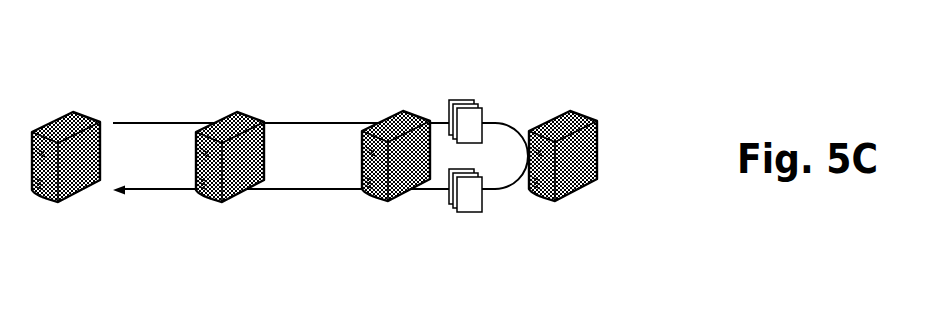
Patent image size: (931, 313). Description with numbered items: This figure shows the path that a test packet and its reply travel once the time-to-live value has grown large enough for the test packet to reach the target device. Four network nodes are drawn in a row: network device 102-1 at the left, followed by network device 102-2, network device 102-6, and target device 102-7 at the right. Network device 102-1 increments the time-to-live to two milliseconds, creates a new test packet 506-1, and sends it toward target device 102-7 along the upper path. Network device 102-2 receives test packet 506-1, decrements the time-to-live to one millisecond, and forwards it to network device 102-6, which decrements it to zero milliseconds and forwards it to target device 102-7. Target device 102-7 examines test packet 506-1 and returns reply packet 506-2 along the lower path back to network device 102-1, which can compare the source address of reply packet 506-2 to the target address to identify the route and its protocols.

The network device 102-1 is at (58, 175).
The network device 102-2 is at (232, 175).
The network device 102-6 is at (398, 175).
The target device 102-7 is at (572, 176).
The test packet 506-1 is at (469, 128).
The reply packet 506-2 is at (470, 193).